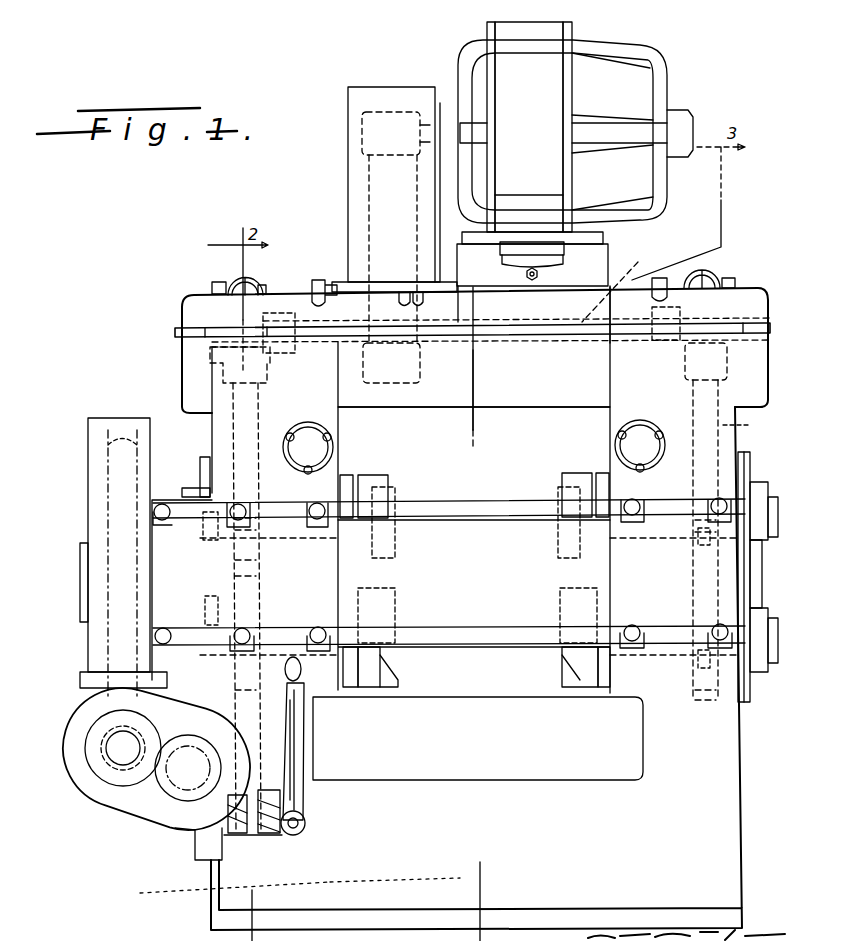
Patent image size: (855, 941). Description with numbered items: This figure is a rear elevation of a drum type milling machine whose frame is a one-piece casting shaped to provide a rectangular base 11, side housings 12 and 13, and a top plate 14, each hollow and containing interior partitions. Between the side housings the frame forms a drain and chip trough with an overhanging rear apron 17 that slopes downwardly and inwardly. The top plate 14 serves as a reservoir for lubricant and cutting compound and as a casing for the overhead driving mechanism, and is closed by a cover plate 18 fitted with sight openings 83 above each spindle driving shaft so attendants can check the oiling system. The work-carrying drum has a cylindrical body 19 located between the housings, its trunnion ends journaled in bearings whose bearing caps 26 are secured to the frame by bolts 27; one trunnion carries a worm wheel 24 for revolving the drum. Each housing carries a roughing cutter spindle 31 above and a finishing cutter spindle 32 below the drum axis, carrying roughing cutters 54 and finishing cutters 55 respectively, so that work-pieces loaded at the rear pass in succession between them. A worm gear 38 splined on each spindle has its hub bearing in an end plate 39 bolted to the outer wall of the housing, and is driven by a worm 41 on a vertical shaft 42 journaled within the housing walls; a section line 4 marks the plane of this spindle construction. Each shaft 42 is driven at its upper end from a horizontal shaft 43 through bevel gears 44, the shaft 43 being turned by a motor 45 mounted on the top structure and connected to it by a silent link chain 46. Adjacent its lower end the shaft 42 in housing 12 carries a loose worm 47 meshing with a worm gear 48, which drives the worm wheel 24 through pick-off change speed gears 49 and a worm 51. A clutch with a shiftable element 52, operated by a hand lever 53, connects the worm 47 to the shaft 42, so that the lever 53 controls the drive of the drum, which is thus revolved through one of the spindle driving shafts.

The rectangular base 11 is at (742, 840).
The side housing 12 is at (318, 410).
The side housing 13 is at (598, 407).
The top plate 14 is at (473, 360).
The rear apron 17 is at (478, 738).
The cover plate 18 is at (298, 300).
The cylindrical body 19 is at (466, 520).
The worm wheel 24 is at (135, 442).
The bearing cap 26 is at (471, 570).
The bolts 27 is at (162, 520).
The roughing cutter spindle 31 is at (265, 500).
The finishing cutter spindle 32 is at (300, 668).
The worm gear 38 is at (258, 475).
The end plate 39 is at (200, 468).
The section line 4 is at (740, 424).
The worms 41 is at (225, 548).
The vertical shaft 42 is at (233, 398).
The horizontal shaft 43 is at (616, 285).
The bevel gears 44 is at (277, 358).
The motor 45 is at (575, 182).
The silent link chain 46 is at (368, 190).
The loose worm 47 is at (303, 750).
The worm gear 48 is at (173, 810).
The pick-off change speed gears 49 is at (127, 787).
The worm 51 is at (103, 767).
The shiftable clutch element 52 is at (305, 836).
The hand lever 53 is at (304, 726).
The roughing cutters 54 is at (394, 500).
The finishing cutters 55 is at (398, 664).
The sight openings 83 is at (237, 280).